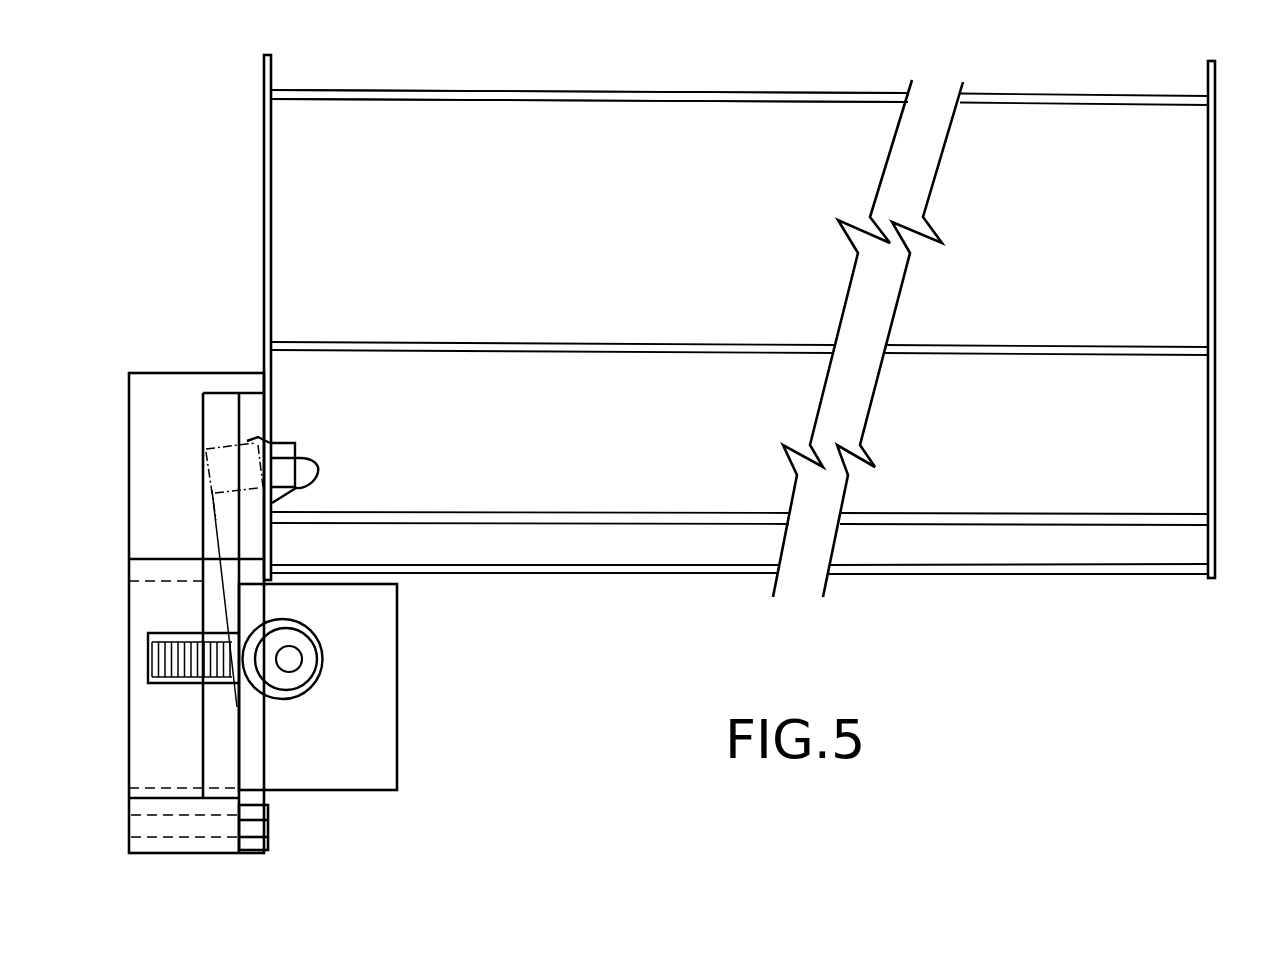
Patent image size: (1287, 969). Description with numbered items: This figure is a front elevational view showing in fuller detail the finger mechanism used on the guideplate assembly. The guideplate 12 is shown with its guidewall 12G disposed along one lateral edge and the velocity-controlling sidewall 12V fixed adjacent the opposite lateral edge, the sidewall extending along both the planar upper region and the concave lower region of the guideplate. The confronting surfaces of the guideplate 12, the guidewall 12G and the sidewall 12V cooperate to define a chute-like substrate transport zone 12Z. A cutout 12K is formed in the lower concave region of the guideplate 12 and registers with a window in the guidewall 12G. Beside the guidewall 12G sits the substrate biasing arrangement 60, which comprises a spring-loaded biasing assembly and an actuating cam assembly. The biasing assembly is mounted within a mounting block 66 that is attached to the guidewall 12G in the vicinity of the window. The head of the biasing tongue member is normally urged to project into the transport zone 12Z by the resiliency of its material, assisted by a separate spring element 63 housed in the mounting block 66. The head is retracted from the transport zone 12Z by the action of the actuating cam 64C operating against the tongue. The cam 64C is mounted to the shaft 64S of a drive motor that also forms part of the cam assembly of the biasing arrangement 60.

The guideplate 12 is at (718, 241).
The substrate transport zone 12Z is at (744, 76).
The guidewall 12G is at (272, 248).
The velocity-controlling sidewall 12V is at (1206, 463).
The cutout 12K is at (304, 458).
The mounting block 66 is at (142, 372).
The substrate biasing arrangement 60 is at (315, 822).
The spring element 63 is at (178, 672).
The actuating cam 64C is at (292, 697).
The shaft 64S is at (290, 660).